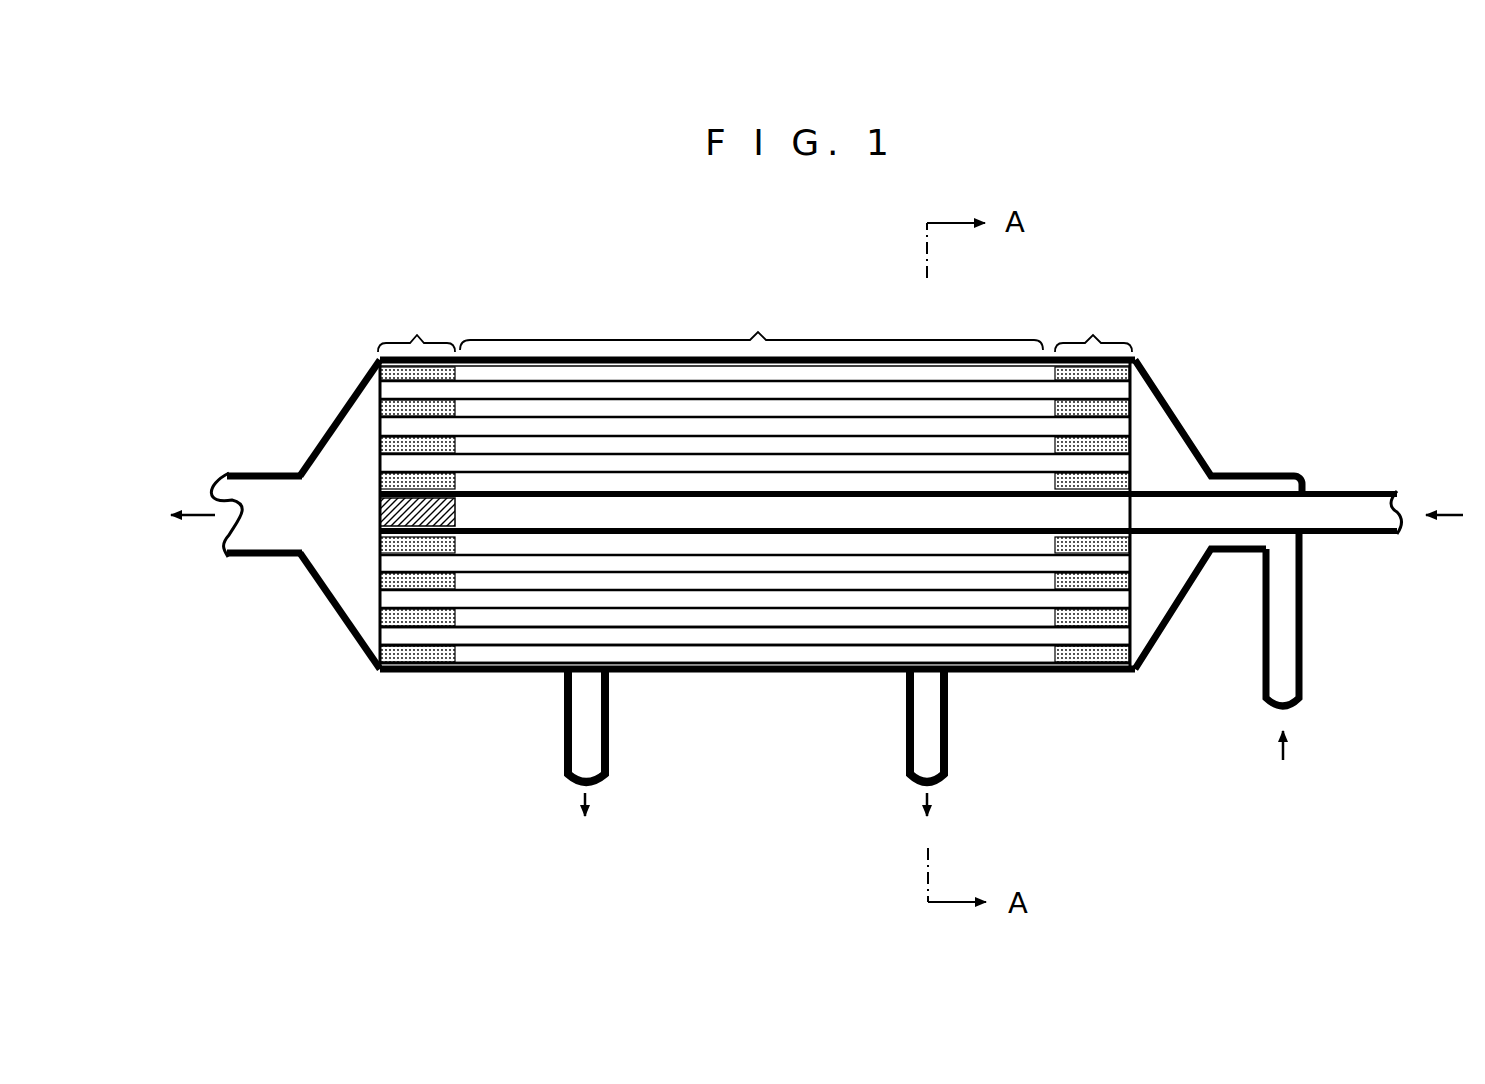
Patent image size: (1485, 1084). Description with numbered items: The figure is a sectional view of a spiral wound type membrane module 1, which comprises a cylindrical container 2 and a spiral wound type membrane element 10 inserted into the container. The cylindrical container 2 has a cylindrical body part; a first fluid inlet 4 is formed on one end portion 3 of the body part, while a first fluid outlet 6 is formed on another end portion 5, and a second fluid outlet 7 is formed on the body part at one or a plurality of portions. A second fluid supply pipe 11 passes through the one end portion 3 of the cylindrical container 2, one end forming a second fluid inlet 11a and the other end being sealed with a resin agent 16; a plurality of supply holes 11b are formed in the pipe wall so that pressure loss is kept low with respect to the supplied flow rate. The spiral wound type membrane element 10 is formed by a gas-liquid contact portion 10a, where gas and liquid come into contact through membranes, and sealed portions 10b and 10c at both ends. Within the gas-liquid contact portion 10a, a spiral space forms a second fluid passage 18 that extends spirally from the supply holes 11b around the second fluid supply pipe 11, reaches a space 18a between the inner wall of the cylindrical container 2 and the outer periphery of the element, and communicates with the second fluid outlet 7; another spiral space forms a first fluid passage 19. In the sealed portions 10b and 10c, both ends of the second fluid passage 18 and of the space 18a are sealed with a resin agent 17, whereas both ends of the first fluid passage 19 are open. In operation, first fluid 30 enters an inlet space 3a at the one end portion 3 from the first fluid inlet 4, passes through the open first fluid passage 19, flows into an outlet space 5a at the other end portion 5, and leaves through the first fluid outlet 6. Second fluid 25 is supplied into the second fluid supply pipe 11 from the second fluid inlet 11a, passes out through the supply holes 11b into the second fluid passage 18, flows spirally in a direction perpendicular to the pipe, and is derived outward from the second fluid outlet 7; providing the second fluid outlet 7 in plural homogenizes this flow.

The spiral wound type membrane module 1 is at (302, 349).
The cylindrical container 2 is at (590, 347).
The one end portion 3 is at (1163, 402).
The inlet space 3a is at (1163, 453).
The first fluid inlet 4 is at (1305, 615).
The another end portion 5 is at (327, 430).
The outlet space 5a is at (363, 407).
The first fluid outlet 6 is at (265, 477).
The second fluid outlet 7 is at (608, 718).
The spiral wound type membrane element 10 is at (859, 378).
The gas-liquid contact portion 10a is at (751, 324).
The sealed portion 10b is at (1093, 326).
The sealed portion 10c is at (416, 481).
The second fluid supply pipe 11 is at (673, 537).
The second fluid inlet 11a is at (1355, 487).
The supply holes 11b is at (553, 525).
The resin agent 16 is at (380, 517).
The resin agent 17 is at (1065, 618).
The second fluid passage 18 is at (718, 617).
The space 18a is at (750, 653).
The first fluid passage 19 is at (800, 635).
The second fluid 25 is at (1445, 515).
The first fluid 30 is at (1313, 758).